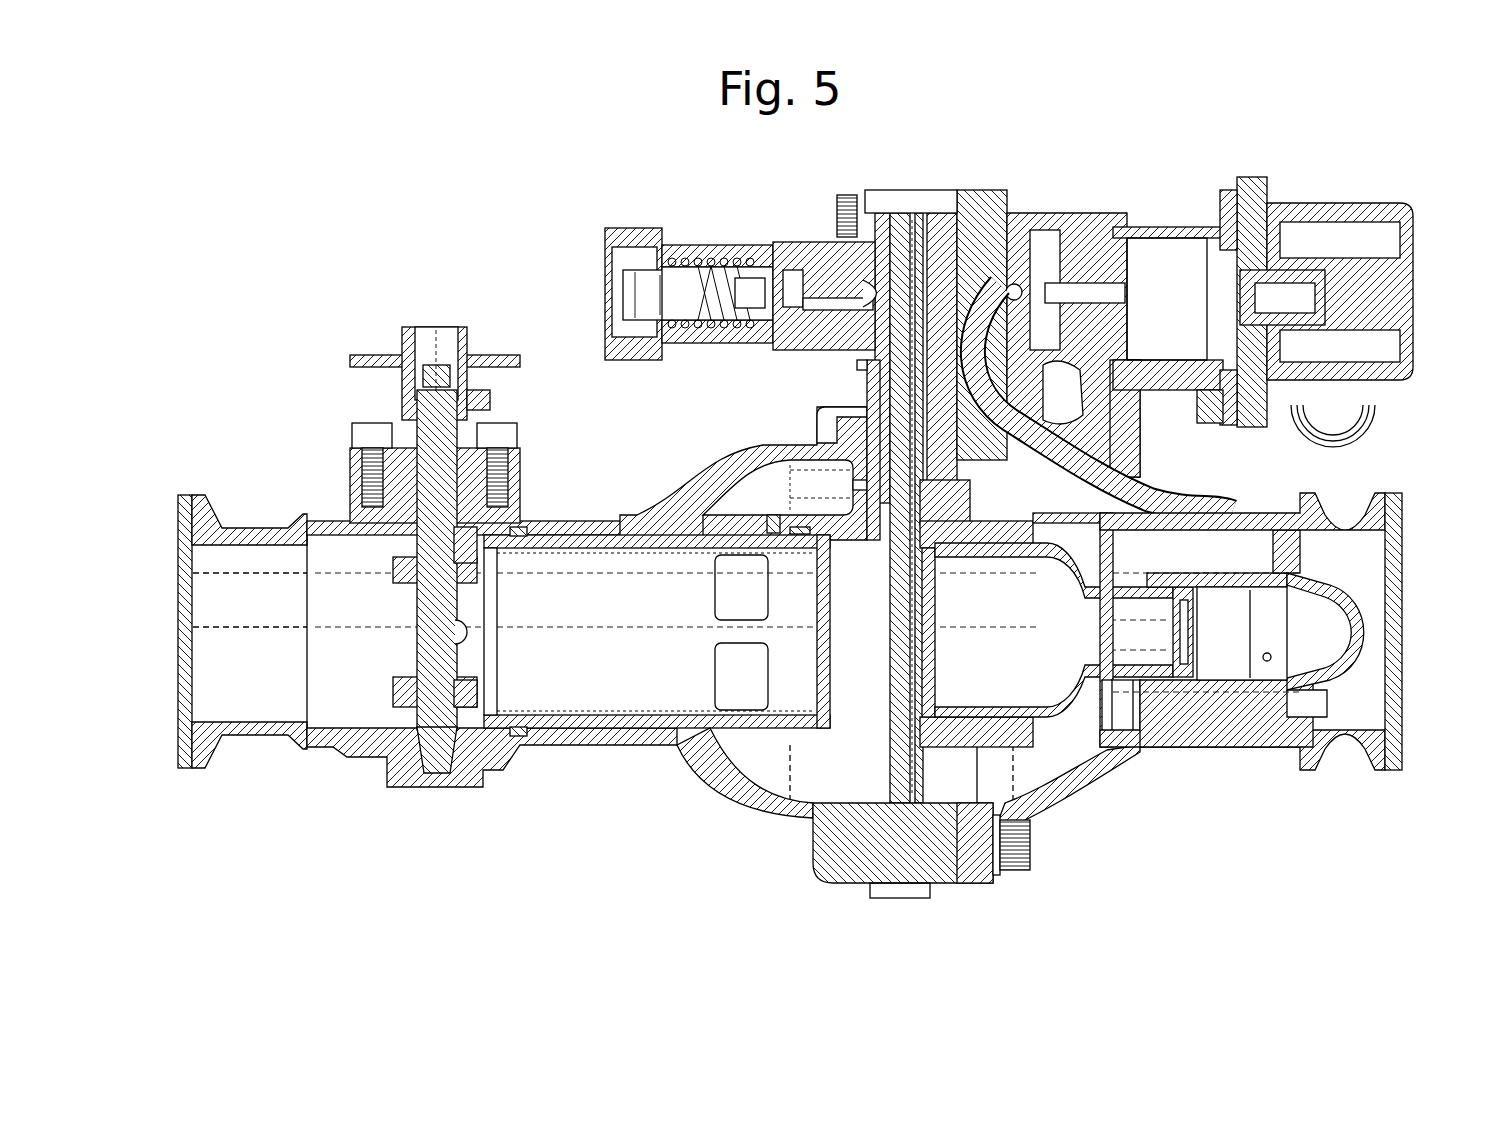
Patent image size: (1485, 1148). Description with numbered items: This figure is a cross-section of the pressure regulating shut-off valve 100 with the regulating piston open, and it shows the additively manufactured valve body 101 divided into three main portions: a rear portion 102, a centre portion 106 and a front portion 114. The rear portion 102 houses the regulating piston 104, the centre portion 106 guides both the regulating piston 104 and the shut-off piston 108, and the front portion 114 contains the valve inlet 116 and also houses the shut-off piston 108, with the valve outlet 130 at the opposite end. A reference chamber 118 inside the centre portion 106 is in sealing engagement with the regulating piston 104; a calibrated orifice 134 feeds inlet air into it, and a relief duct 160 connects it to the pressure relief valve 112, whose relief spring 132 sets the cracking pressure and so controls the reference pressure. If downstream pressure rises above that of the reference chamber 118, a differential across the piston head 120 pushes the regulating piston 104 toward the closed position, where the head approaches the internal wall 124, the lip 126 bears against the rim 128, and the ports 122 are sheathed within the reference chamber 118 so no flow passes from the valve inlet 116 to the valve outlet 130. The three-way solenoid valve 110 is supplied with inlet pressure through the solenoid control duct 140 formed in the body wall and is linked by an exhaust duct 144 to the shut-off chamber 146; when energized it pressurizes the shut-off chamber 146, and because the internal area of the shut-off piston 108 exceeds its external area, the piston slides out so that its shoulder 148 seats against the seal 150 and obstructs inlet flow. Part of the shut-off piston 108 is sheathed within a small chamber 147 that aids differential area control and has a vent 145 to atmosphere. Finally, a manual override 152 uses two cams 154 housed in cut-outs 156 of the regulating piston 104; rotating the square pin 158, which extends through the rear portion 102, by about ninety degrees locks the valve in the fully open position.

The fluid regulator 100 is at (225, 285).
The valve body 101 is at (1215, 497).
The rear portion 102 is at (345, 758).
The regulating piston 104 is at (548, 690).
The centre portion 106 is at (853, 858).
The shut-off piston 108 is at (1147, 687).
The solenoid valve 110 is at (1185, 205).
The pressure relief valve 112 is at (608, 270).
The front portion 114 is at (1238, 733).
The valve inlet 116 is at (1395, 600).
The reference chamber 118 is at (850, 703).
The piston head 120 is at (817, 690).
The ports 122 is at (723, 688).
The internal wall 124 is at (902, 713).
The lip 126 is at (710, 530).
The rim 128 is at (770, 515).
The valve outlet 130 is at (178, 598).
The relief spring 132 is at (720, 262).
The calibrated orifice 134 is at (853, 485).
The solenoid control duct 140 is at (1118, 480).
The exhaust duct 144 is at (985, 210).
The vent 145 is at (1267, 662).
The shut-off chamber 146 is at (1013, 677).
The small chamber 147 is at (1330, 645).
The shoulder 148 is at (1060, 737).
The seal 150 is at (1120, 750).
The manual override 152 is at (386, 563).
The cams 154 is at (440, 707).
The cut-outs 156 is at (345, 528).
The square pin 158 is at (462, 327).
The relief duct 160 is at (883, 330).